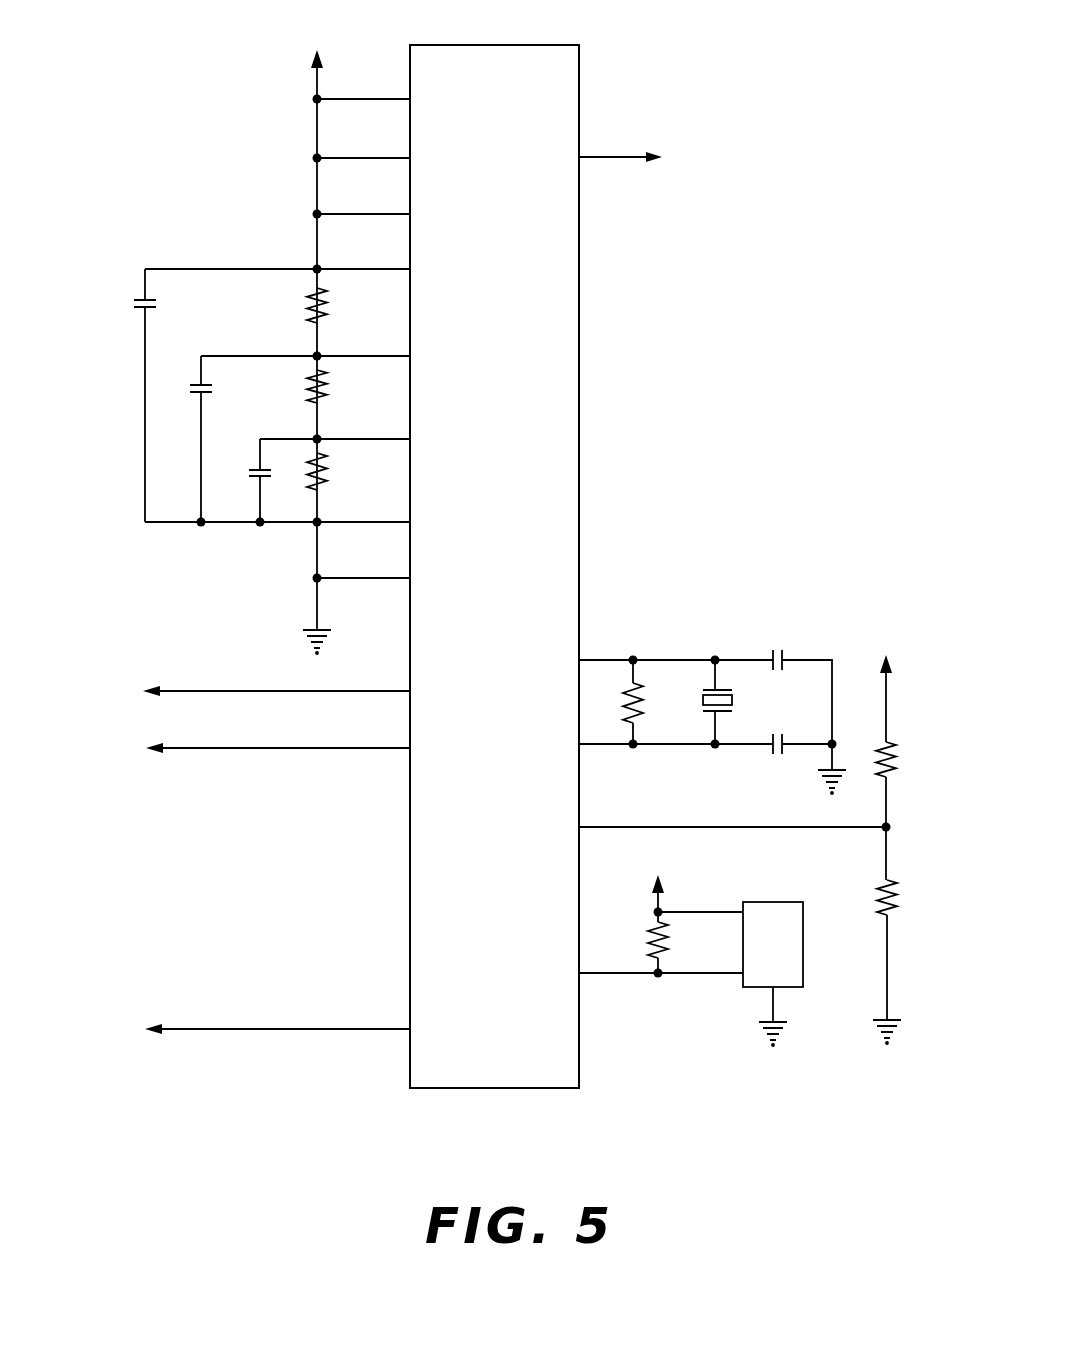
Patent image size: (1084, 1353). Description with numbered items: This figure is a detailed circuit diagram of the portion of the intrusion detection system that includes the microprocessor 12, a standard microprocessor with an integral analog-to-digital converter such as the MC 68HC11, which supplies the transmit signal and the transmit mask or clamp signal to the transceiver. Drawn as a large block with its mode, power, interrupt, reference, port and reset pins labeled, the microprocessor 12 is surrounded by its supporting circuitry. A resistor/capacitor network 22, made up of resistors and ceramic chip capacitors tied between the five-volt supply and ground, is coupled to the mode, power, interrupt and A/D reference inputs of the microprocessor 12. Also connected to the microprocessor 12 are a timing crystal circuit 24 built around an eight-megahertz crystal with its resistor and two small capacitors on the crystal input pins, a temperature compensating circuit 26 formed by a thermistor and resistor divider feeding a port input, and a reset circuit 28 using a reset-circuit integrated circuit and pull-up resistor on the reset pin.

The microprocessor 12 is at (579, 322).
The resistor/capacitor network 22 is at (150, 240).
The timing crystal circuit 24 is at (780, 609).
The temperature compensating circuit 26 is at (923, 1010).
The reset circuit 28 is at (698, 1039).